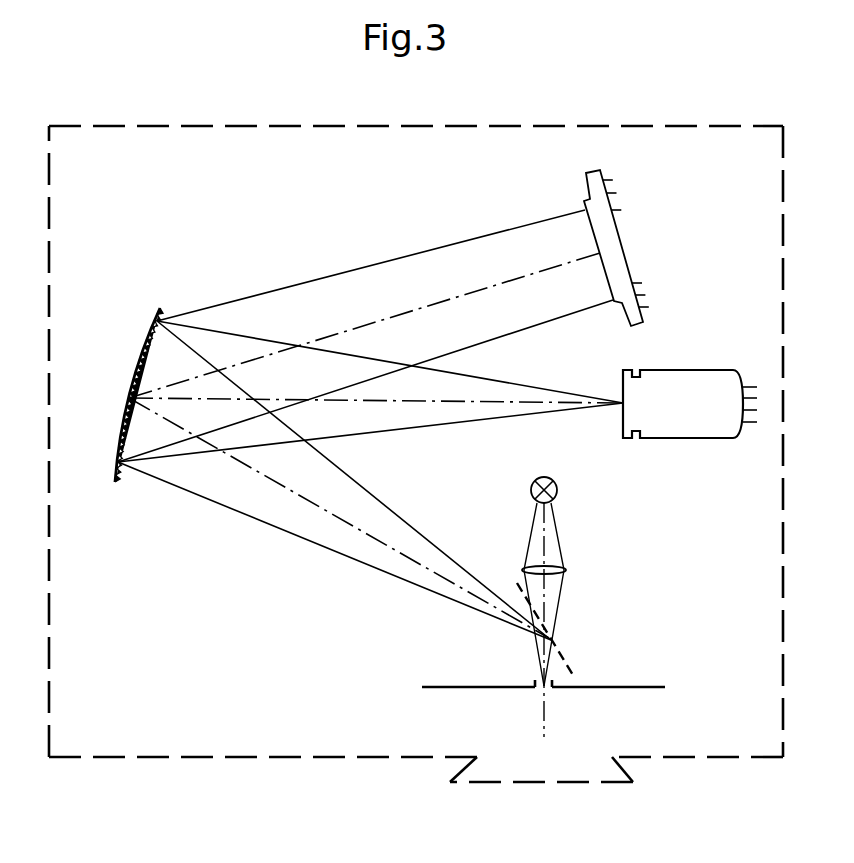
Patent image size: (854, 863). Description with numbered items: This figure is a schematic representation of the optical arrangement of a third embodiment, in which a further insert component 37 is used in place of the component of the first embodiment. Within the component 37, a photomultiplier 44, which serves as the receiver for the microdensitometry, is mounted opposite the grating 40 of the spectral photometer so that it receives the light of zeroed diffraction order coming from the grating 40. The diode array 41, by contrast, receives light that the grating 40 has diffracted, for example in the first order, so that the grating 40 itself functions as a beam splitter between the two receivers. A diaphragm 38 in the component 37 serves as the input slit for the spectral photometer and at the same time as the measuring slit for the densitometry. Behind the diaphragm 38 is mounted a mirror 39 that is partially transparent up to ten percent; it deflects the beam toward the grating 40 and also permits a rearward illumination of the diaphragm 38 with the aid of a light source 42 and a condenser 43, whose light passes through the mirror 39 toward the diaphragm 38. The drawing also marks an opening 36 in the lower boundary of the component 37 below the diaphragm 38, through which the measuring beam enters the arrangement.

The opening in housing 36 is at (636, 773).
The component 37 is at (552, 127).
The diaphragm 38 is at (637, 687).
The mirror 39 is at (557, 653).
The grating 40 is at (115, 482).
The diode array 41 is at (615, 245).
The light source 42 is at (558, 492).
The condenser 43 is at (566, 570).
The photomultiplier 44 is at (662, 428).